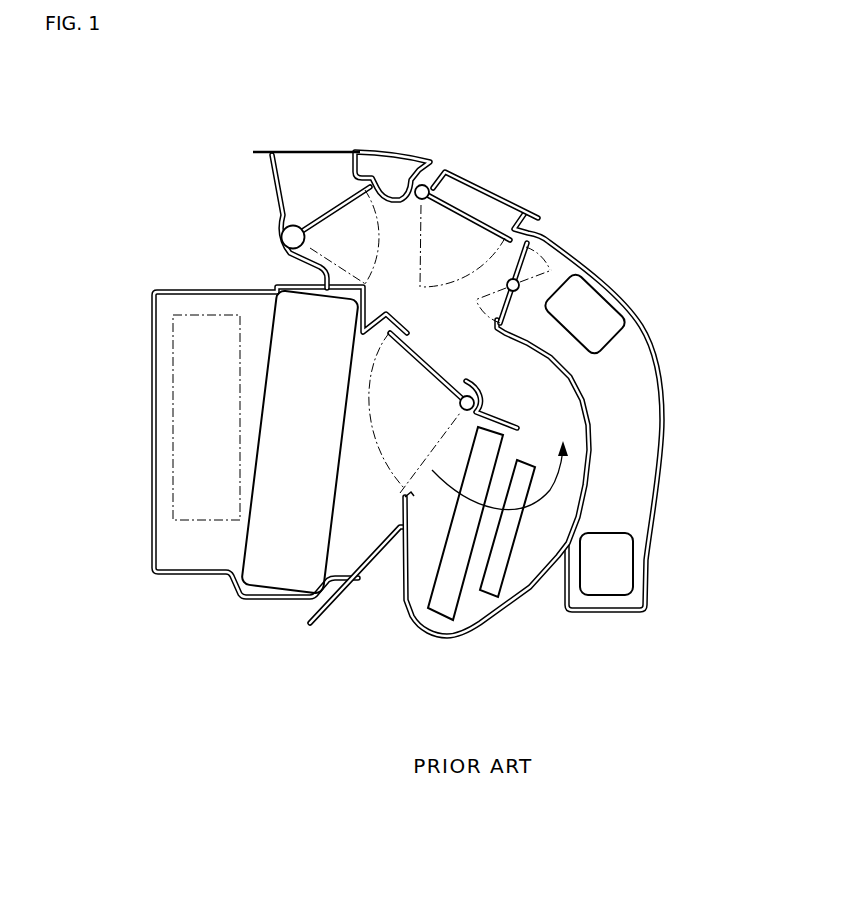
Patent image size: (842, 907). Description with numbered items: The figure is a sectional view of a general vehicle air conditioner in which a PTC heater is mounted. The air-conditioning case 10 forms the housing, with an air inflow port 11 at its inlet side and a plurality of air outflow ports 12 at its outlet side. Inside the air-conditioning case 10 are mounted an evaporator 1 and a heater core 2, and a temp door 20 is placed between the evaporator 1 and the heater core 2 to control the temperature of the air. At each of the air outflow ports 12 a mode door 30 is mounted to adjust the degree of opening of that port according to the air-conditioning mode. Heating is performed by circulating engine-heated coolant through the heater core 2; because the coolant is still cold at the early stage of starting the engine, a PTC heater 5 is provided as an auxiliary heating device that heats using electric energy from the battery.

The evaporator 1 is at (270, 584).
The heater core 2 is at (443, 603).
The PTC heater 5 is at (490, 587).
The air-conditioning case 10 is at (660, 432).
The air inflow port 11 is at (173, 417).
The air outflow port 12 is at (310, 167).
The temp door 20 is at (436, 383).
The mode door 30 is at (320, 216).